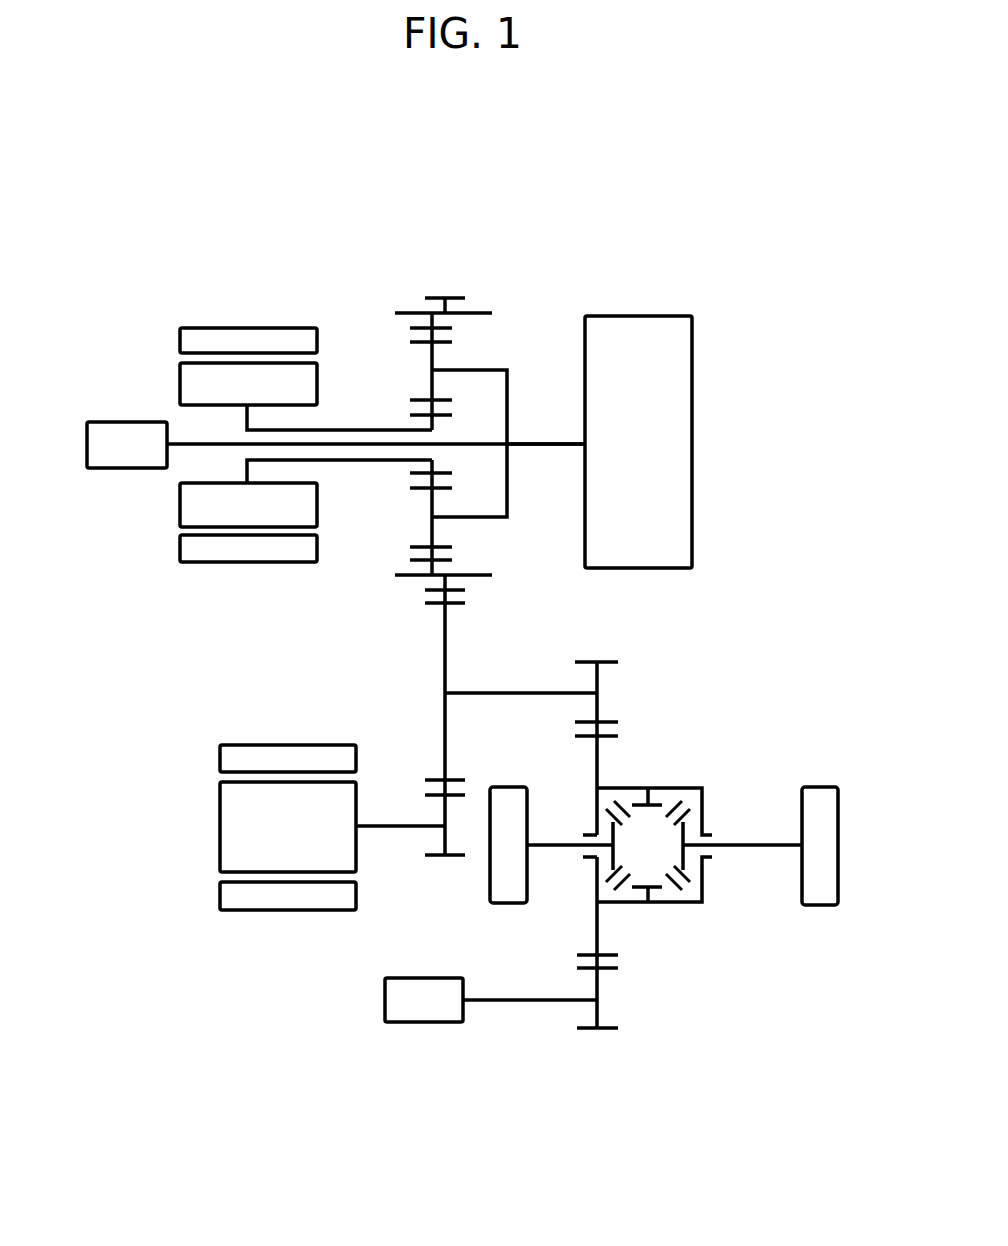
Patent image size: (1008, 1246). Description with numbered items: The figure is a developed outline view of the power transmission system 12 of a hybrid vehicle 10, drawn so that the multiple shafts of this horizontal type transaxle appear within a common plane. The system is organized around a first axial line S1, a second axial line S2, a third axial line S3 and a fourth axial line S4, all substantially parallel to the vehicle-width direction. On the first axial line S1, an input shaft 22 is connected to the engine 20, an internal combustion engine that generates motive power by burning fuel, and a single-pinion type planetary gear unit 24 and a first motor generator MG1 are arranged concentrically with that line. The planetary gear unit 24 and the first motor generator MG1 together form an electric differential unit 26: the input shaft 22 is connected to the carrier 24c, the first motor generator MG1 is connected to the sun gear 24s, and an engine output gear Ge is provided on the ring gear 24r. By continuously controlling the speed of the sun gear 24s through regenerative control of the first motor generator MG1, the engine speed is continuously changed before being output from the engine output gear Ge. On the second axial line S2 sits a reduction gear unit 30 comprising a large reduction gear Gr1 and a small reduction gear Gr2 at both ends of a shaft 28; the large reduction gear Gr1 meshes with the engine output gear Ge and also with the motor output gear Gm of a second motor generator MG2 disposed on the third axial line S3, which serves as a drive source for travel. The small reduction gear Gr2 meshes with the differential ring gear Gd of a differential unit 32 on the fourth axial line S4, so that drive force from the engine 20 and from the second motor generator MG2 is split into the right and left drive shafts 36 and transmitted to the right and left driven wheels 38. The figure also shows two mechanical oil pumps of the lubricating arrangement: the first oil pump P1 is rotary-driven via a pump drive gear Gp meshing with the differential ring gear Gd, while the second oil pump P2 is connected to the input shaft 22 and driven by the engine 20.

The hybrid vehicle 10 is at (662, 168).
The power transmission system 12 is at (250, 205).
The engine 20 is at (680, 385).
The input shaft 22 is at (547, 448).
The planetary gear unit 24 is at (352, 569).
The carrier 24c is at (477, 369).
The sun gear 24s is at (414, 413).
The ring gear 24r is at (450, 560).
The electric differential unit 26 is at (474, 232).
The shaft 28 is at (508, 697).
The reduction gear unit 30 is at (686, 670).
The differential unit 32 is at (697, 935).
The drive shafts 36 is at (553, 848).
The driven wheels 38 is at (507, 893).
The engine output gear Ge is at (437, 297).
The large reduction gear Gr1 is at (456, 604).
The small reduction gear Gr2 is at (599, 660).
The differential ring gear Gd is at (618, 737).
The motor output gear Gm is at (438, 857).
The pump drive gear Gp is at (592, 1030).
The first axial line S1 is at (315, 448).
The second axial line S2 is at (498, 715).
The third axial line S3 is at (311, 826).
The fourth axial line S4 is at (860, 848).
The first oil pump P1 is at (491, 1000).
The second oil pump P2 is at (127, 445).
The first motor generator MG1 is at (306, 432).
The second motor generator MG2 is at (288, 812).